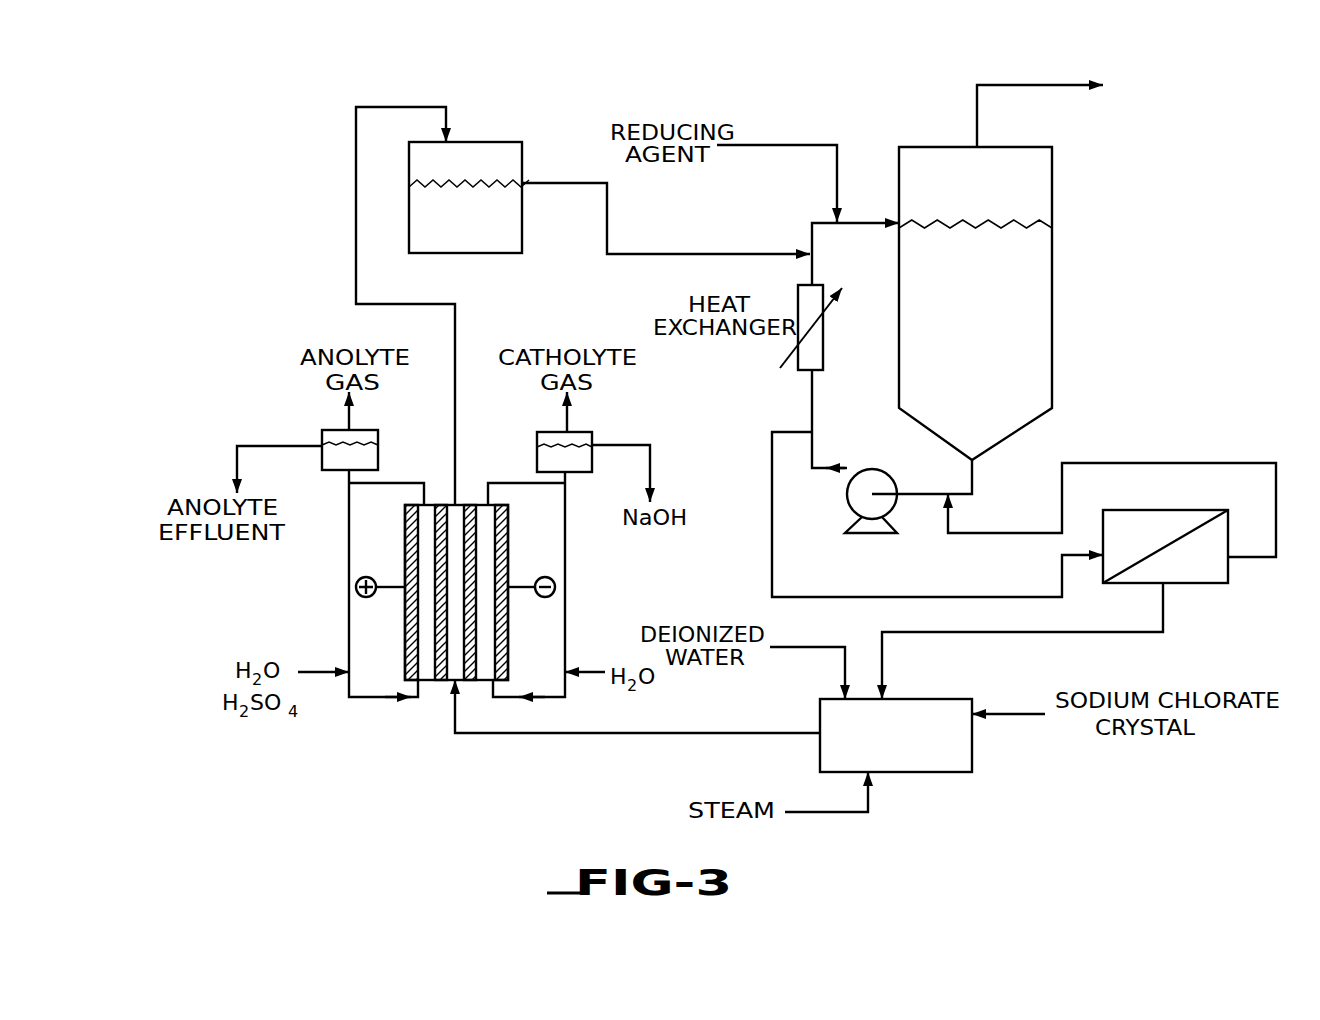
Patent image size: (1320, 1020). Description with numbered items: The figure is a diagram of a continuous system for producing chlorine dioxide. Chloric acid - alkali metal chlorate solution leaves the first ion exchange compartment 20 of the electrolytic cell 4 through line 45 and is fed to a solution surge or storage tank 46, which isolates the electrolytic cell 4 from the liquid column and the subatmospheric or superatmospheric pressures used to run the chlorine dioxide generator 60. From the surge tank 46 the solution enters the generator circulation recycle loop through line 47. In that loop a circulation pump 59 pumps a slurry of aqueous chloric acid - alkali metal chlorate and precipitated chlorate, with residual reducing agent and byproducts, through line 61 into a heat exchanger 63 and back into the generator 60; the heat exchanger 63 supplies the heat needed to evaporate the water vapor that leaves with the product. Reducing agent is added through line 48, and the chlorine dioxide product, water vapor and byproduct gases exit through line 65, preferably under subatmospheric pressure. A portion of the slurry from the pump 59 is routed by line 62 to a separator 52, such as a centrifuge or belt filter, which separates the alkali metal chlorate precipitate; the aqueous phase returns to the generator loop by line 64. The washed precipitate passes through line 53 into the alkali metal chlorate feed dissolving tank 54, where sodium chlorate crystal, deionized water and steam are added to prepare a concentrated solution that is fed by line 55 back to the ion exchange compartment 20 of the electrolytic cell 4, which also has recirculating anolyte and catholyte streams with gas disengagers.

The electrolytic cell 4 is at (468, 633).
The ion exchange compartment 20 is at (450, 684).
The line 45 is at (356, 217).
The solution surge or storage tank 46 is at (480, 142).
The line 47 is at (690, 254).
The line 48 is at (795, 145).
The separator 52 is at (1195, 583).
The line 53 is at (975, 632).
The alkali metal chlorate feed dissolving tank 54 is at (918, 772).
The line 55 is at (598, 733).
The circulation pump 59 is at (846, 505).
The chlorine dioxide generator 60 is at (1052, 290).
The line 61 is at (812, 405).
The line 62 is at (815, 597).
The heat exchanger 63 is at (823, 330).
The line 64 is at (1140, 463).
The line 65 is at (1060, 111).